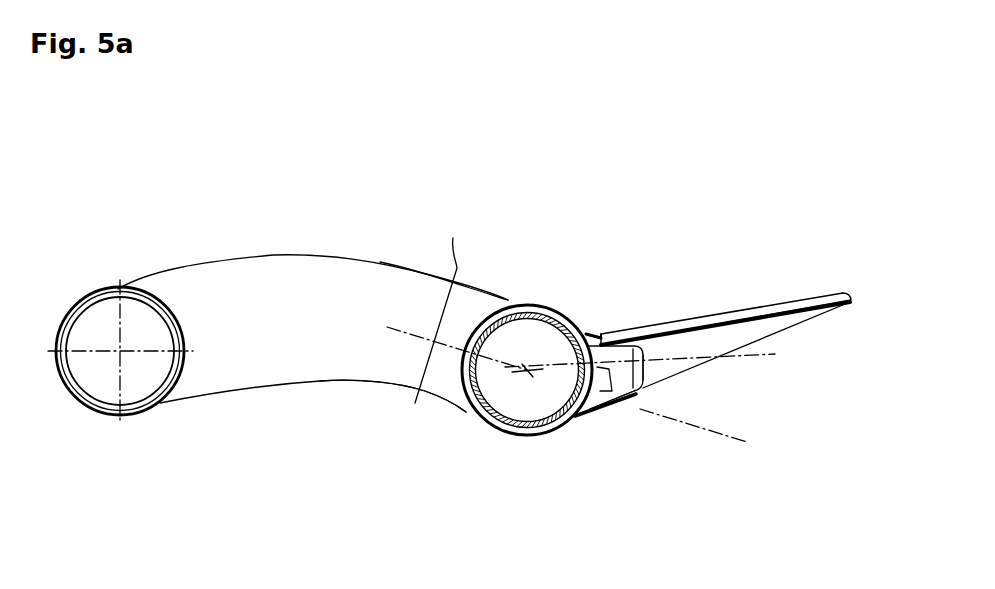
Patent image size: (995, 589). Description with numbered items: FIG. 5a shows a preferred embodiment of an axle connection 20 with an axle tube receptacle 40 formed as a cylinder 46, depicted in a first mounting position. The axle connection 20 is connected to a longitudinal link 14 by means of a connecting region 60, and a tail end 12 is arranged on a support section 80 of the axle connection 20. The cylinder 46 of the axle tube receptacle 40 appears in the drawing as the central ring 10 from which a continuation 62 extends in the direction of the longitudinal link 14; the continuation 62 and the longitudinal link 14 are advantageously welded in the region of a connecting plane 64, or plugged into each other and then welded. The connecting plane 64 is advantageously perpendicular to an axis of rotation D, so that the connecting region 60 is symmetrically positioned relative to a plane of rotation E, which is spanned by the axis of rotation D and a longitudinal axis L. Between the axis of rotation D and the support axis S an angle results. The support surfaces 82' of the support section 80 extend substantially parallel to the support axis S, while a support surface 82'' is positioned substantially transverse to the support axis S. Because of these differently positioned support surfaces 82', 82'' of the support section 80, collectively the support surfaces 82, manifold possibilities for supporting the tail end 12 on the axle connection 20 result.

The longitudinal link 14 is at (222, 287).
The connecting region 60 is at (446, 312).
The continuation 62 is at (443, 385).
The connecting plane 64 is at (453, 238).
The plane of rotation E is at (388, 328).
The axis of rotation D is at (307, 448).
The hub ring 10 is at (567, 313).
The longitudinal axis L is at (525, 375).
The support axis S is at (770, 355).
The tail end 12 is at (718, 317).
The support surfaces 82 is at (638, 336).
The support surfaces 82' is at (645, 425).
The support surface 82'' is at (713, 392).
The axle tube receptacle 40 is at (587, 330).
The cylinder 46 is at (587, 330).
The support section 80 is at (603, 436).
The axle connection 20 is at (580, 203).